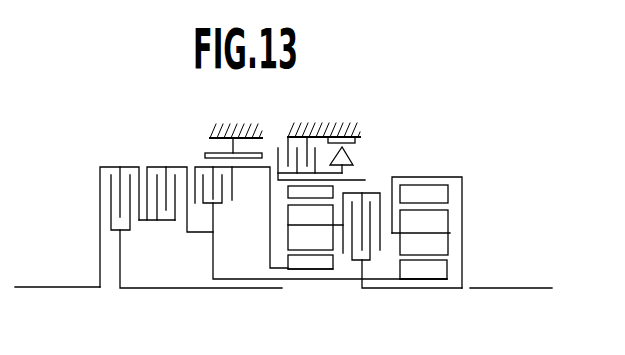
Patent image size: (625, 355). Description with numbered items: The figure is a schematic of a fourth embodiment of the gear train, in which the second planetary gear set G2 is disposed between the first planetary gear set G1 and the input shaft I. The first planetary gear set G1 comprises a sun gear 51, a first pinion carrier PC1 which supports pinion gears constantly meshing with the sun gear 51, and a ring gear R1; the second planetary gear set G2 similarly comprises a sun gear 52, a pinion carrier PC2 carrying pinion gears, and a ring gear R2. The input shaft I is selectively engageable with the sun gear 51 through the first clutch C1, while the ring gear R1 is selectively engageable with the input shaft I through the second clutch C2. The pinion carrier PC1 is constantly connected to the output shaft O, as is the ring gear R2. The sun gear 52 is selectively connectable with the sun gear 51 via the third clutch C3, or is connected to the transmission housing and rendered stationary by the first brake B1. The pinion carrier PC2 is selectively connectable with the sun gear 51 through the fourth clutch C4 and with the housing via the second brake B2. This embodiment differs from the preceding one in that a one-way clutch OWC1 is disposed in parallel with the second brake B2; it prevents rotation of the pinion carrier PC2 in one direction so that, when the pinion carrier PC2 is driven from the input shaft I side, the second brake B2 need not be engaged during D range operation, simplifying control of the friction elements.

The input shaft I is at (40, 287).
The output shaft O is at (516, 287).
The first clutch C1 is at (158, 163).
The second clutch C2 is at (104, 163).
The third clutch C3 is at (198, 163).
The fourth clutch C4 is at (364, 190).
The first brake B1 is at (206, 152).
The second brake B2 is at (288, 140).
The one-way clutch OWC1 is at (349, 150).
The ring gear R1 is at (444, 193).
The first pinion carrier PC1 is at (410, 233).
The first planetary gear set G1 is at (430, 292).
The sun gear 51 is at (433, 272).
The ring gear R2 is at (298, 188).
The pinion carrier PC2 is at (298, 230).
The second planetary gear set G2 is at (312, 265).
The sun gear 52 is at (322, 276).